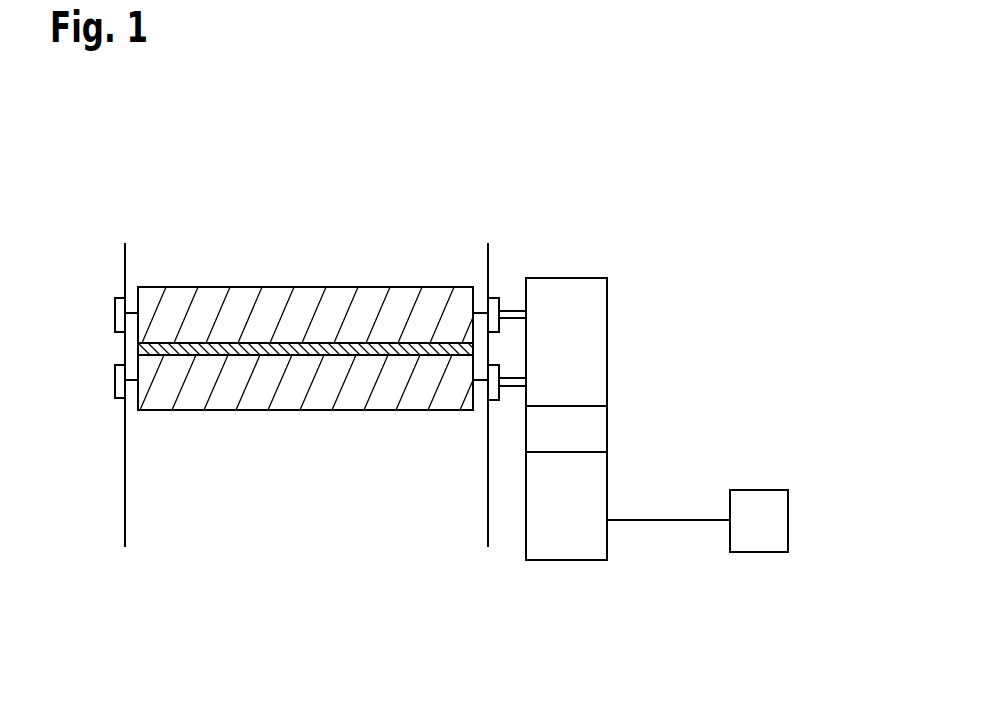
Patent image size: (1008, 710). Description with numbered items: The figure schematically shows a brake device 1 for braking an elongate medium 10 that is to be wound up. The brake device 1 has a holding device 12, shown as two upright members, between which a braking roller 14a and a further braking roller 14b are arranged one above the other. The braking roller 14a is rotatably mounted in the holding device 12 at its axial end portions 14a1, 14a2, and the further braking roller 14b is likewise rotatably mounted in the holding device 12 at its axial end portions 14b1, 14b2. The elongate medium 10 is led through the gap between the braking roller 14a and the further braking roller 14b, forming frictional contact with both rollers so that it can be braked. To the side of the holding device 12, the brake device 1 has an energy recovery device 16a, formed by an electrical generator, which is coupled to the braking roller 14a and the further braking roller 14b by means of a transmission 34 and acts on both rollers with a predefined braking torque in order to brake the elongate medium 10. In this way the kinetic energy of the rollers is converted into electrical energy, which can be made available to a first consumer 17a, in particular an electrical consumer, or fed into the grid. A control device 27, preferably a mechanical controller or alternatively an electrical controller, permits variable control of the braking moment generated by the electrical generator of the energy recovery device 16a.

The brake device 1 is at (100, 243).
The elongate medium 10 is at (297, 348).
The holding device 12 is at (125, 492).
The braking roller 14a is at (240, 300).
The axial end portion 14a1 is at (481, 318).
The axial end portion 14a2 is at (132, 318).
The further braking roller 14b is at (349, 378).
The axial end portion 14b1 is at (481, 380).
The axial end portion 14b2 is at (132, 380).
The transmission 34 is at (598, 340).
The control device 27 is at (598, 428).
The energy recovery device 16a is at (598, 487).
The first consumer 17a is at (778, 518).